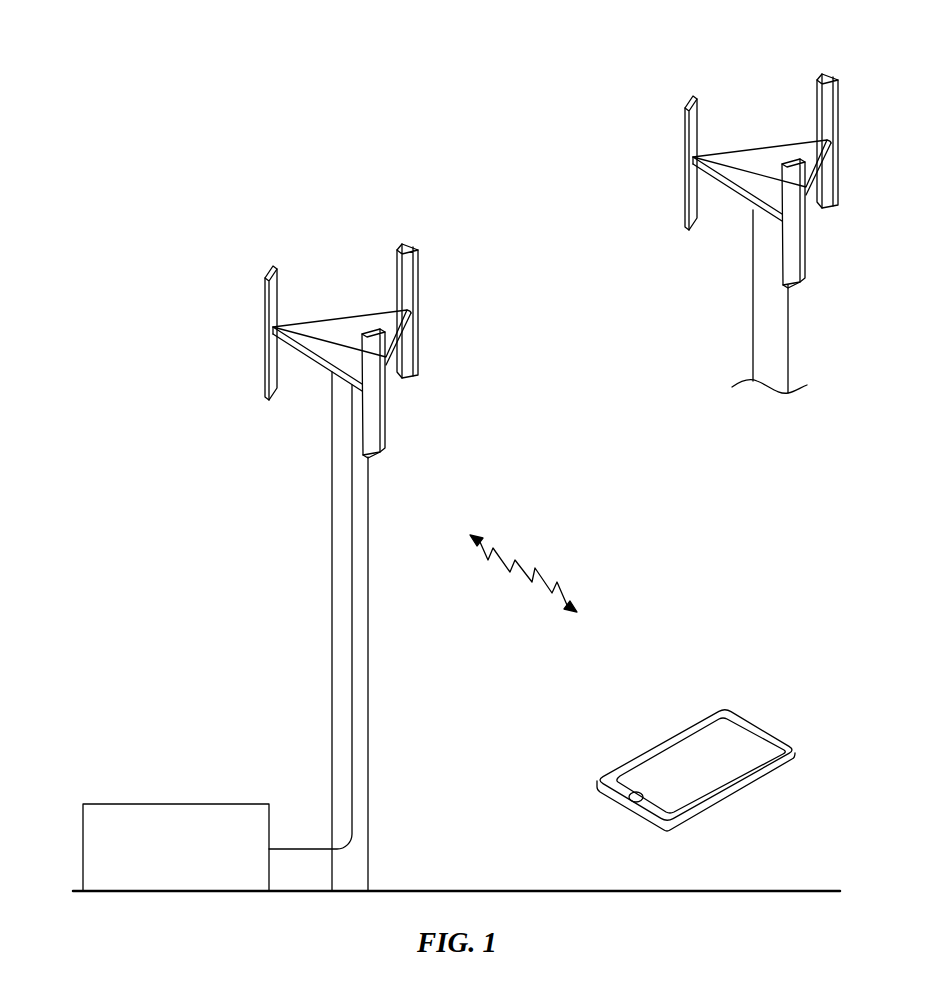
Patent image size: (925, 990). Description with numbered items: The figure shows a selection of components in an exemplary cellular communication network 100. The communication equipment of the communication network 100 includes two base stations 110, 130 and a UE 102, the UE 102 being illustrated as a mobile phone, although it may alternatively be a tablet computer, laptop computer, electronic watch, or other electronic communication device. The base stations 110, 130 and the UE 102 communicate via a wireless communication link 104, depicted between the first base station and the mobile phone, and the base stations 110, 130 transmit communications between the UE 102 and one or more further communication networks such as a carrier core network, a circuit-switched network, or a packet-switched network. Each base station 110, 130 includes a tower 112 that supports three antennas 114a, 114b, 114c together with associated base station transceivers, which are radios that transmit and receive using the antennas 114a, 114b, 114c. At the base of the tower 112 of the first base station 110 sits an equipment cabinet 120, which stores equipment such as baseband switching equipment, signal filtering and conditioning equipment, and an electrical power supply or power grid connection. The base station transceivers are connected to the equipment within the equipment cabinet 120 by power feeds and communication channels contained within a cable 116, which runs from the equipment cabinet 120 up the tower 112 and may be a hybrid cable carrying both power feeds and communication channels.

The communication network 100 is at (197, 78).
The UE 102 is at (696, 724).
The wireless communication link 104 is at (520, 561).
The base station 110 is at (334, 319).
The tower 112 is at (369, 709).
The antenna 114a is at (386, 423).
The antenna 114b is at (418, 293).
The antenna 114c is at (265, 302).
The cable 116 is at (353, 651).
The equipment cabinet 120 is at (83, 847).
The base station 130 is at (747, 150).